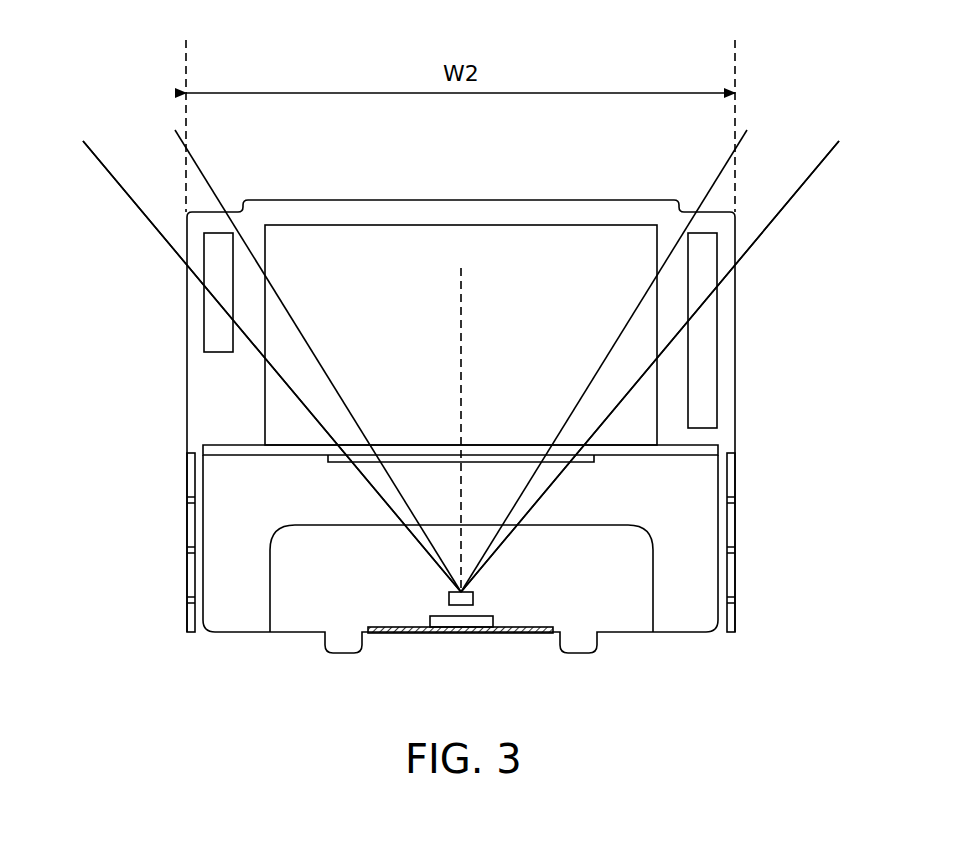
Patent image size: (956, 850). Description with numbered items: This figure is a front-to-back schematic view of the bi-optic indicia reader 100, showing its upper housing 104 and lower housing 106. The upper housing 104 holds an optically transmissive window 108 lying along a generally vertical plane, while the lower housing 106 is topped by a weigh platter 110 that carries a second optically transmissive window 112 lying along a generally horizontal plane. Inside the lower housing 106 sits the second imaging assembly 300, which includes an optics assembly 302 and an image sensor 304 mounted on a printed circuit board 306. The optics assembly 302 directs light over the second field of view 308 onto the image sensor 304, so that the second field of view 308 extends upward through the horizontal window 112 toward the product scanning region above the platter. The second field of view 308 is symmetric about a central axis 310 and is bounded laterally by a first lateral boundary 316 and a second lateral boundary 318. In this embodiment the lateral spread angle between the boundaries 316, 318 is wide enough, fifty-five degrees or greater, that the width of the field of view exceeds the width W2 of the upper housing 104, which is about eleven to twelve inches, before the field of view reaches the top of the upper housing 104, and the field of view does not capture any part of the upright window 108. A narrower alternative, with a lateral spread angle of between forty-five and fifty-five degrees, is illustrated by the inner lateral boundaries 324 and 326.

The bi-optic indicia reader 100 is at (134, 389).
The upper housing 104 is at (460, 200).
The lower housing 106 is at (697, 517).
The optically transmissive window 108 is at (565, 302).
The weigh platter 110 is at (232, 445).
The optically transmissive window 112 is at (340, 463).
The second imaging assembly 300 is at (556, 575).
The optics assembly 302 is at (476, 591).
The image sensor 304 is at (492, 616).
The printed circuit board 306 is at (393, 627).
The second field of view 308 is at (140, 208).
The SFOV central axis 310 is at (461, 350).
The first SFOV lateral boundary 316 is at (177, 252).
The second SFOV lateral boundary 318 is at (750, 252).
The lateral boundary 324 is at (207, 175).
The lateral boundary 326 is at (720, 168).